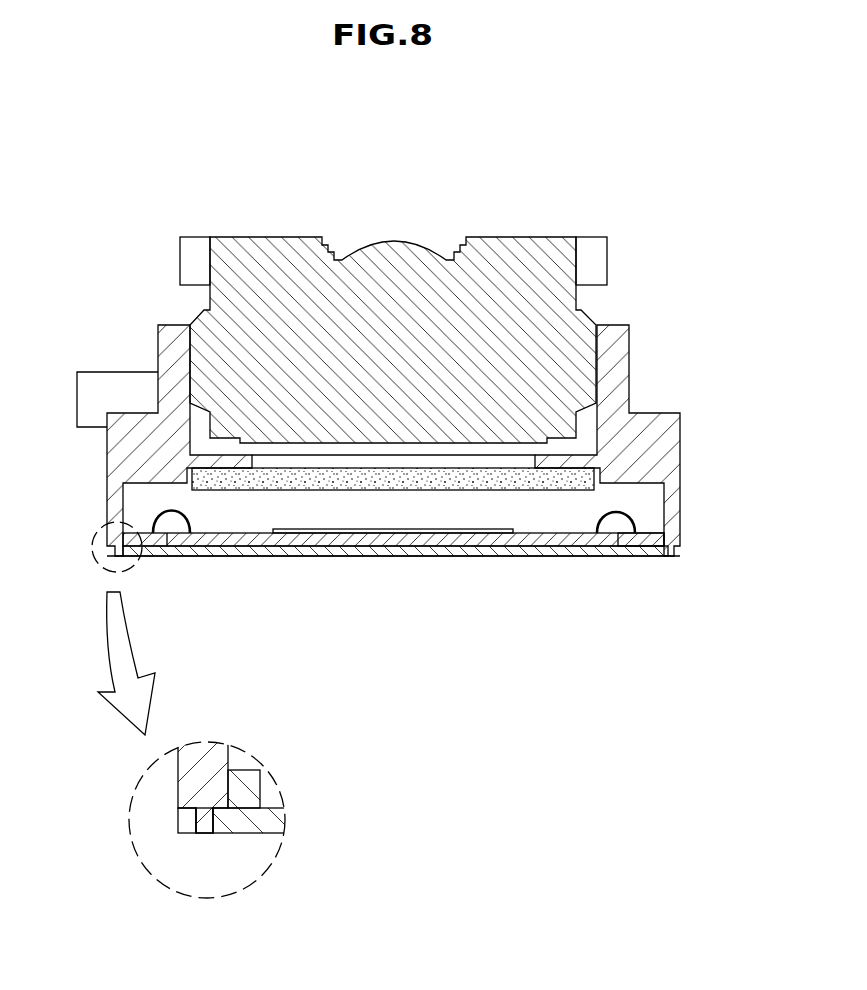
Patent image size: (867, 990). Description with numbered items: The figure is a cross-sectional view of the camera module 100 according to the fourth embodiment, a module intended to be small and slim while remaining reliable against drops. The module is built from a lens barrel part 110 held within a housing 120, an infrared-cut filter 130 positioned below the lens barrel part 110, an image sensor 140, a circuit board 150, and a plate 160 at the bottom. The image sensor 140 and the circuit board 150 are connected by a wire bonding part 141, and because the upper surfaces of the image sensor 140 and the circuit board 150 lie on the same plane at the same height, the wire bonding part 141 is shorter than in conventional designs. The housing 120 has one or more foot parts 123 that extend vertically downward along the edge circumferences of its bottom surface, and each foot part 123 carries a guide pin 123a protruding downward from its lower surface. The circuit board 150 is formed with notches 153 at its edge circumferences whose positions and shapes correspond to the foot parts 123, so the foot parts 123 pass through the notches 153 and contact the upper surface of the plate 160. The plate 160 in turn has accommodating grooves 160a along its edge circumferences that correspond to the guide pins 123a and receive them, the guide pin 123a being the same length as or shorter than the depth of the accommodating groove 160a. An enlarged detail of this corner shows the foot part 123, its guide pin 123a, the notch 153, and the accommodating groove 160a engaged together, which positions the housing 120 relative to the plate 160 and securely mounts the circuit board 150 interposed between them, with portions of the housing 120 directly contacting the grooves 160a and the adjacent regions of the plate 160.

The camera module 100 is at (190, 122).
The lens barrel part 110 is at (560, 263).
The housing 120 is at (617, 357).
The foot parts 123 is at (197, 775).
The guide pins 123a is at (203, 822).
The infrared (IR)-cut filter 130 is at (387, 470).
The image sensor 140 is at (530, 538).
The wire bonding part 141 is at (626, 514).
The circuit board 150 is at (642, 538).
The notches 153 is at (232, 790).
The plate 160 is at (258, 548).
The accommodating grooves 160a is at (215, 820).